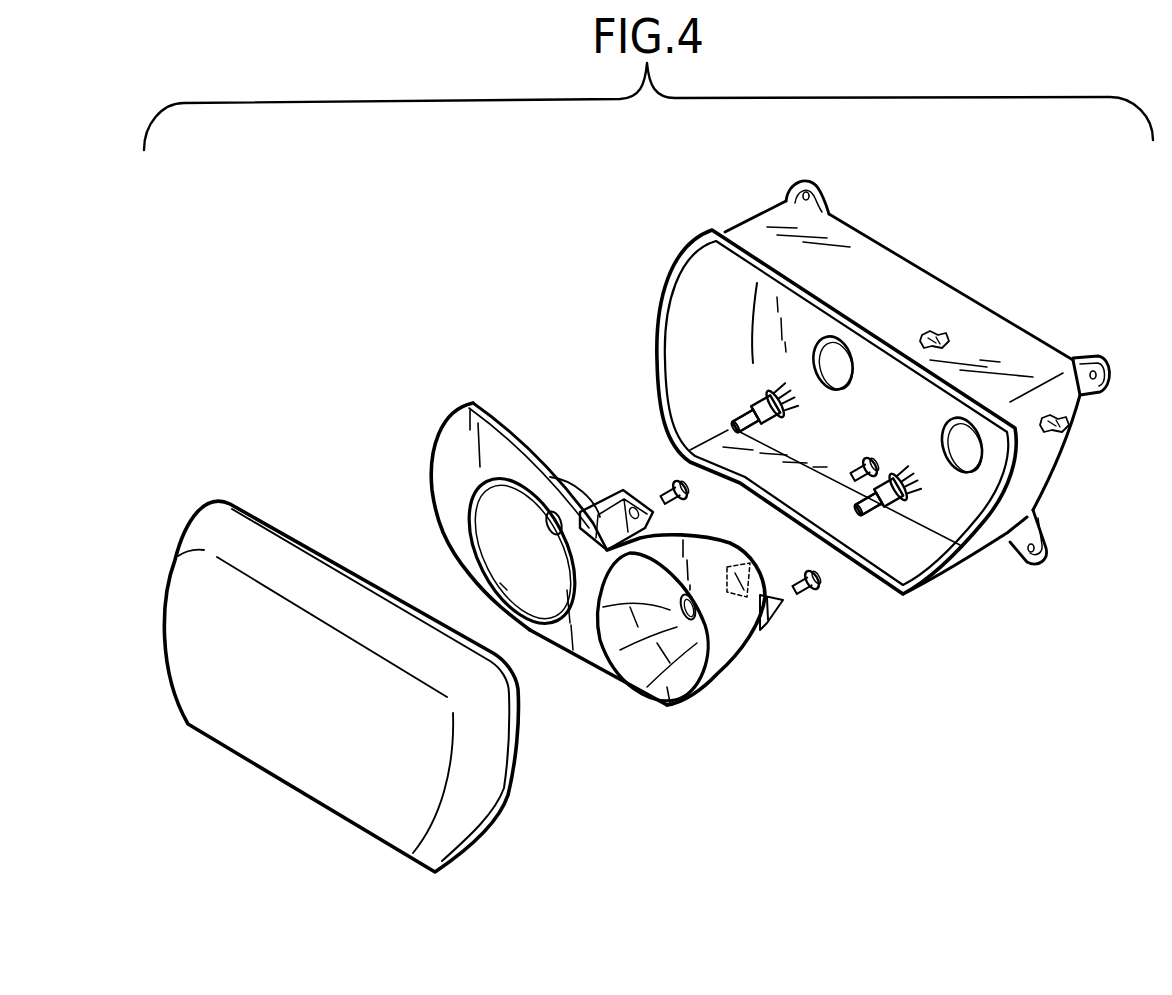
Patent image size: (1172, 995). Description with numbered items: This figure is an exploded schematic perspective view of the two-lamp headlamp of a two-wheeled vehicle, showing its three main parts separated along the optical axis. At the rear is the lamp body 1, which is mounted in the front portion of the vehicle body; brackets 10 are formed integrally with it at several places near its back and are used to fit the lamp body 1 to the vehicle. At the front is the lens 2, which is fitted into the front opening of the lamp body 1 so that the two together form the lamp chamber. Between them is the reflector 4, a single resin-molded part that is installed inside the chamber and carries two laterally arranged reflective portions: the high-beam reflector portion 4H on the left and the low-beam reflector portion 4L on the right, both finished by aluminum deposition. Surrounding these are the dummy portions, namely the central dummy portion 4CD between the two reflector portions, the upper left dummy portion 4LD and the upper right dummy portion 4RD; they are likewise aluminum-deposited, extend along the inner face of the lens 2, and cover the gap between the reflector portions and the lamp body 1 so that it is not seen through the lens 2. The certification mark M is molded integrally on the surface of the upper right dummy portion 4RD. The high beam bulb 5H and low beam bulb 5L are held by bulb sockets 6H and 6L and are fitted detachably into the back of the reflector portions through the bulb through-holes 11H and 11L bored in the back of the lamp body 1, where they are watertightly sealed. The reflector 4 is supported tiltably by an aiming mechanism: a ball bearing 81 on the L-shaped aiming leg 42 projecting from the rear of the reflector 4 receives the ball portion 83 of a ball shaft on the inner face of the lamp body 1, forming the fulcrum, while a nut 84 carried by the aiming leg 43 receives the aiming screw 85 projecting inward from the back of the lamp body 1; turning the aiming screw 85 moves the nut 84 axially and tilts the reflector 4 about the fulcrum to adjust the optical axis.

The lamp body 1 is at (881, 393).
The lens 2 is at (334, 784).
The reflector 4 is at (604, 553).
The upper left dummy portion 4LD is at (503, 433).
The upper right dummy portion 4RD is at (727, 663).
The central dummy portion 4CD is at (554, 642).
The high-beam reflector portion 4H is at (486, 546).
The low-beam reflector portion 4L is at (669, 700).
The high beam bulb 5H is at (740, 424).
The bulb socket 6H is at (758, 388).
The low beam bulb 5L is at (864, 524).
The bulb socket 6L is at (893, 520).
The bracket 10 is at (803, 182).
The bulb through-hole 11H is at (852, 386).
The bulb through-hole 11L is at (985, 457).
The aiming leg 42 is at (606, 495).
The aiming leg 43 is at (780, 625).
The ball bearing 81 is at (694, 500).
The ball portion 83 is at (940, 340).
The nut 84 is at (817, 596).
The aiming screw 85 is at (858, 468).
The certification mark M is at (753, 556).